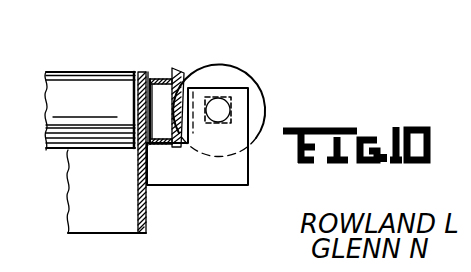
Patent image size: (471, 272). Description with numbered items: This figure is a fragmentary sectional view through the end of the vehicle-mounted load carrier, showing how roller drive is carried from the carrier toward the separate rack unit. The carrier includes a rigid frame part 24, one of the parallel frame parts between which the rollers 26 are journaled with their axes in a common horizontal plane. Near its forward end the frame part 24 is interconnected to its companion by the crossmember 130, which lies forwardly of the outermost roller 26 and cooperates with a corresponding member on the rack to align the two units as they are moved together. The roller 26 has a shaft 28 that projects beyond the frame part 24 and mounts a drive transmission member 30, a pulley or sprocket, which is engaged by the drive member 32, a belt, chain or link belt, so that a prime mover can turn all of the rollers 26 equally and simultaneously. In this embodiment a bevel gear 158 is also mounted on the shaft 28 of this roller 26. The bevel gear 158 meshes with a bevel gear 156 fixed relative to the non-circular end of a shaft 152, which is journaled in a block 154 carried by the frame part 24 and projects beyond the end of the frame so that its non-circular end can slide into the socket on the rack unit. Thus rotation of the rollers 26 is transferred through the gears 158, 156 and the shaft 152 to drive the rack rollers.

The frame part 24 is at (146, 218).
The roller 26 is at (62, 88).
The roller shaft 28 is at (133, 106).
The drive transmission member 30 is at (163, 87).
The drive member 32 is at (153, 77).
The crossmember 130 is at (90, 221).
The shaft 152 is at (218, 110).
The block 154 is at (212, 177).
The bevel gear 156 is at (235, 80).
The bevel gear 158 is at (178, 72).